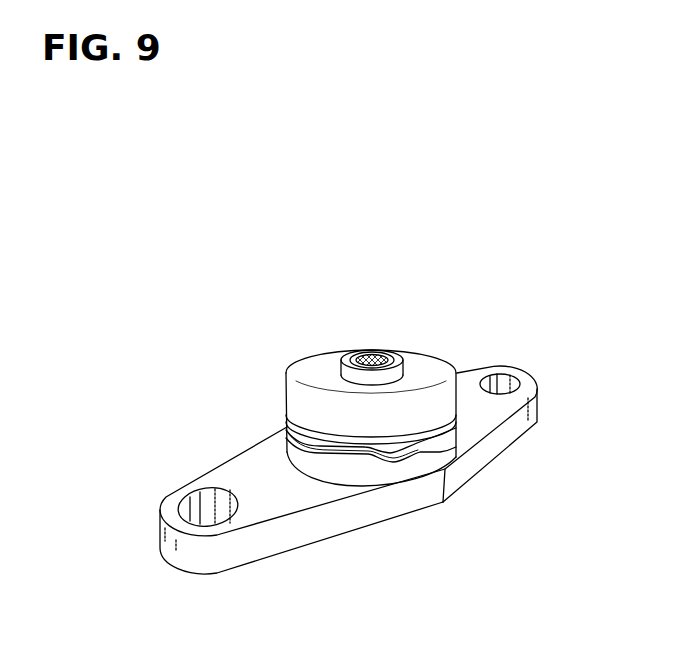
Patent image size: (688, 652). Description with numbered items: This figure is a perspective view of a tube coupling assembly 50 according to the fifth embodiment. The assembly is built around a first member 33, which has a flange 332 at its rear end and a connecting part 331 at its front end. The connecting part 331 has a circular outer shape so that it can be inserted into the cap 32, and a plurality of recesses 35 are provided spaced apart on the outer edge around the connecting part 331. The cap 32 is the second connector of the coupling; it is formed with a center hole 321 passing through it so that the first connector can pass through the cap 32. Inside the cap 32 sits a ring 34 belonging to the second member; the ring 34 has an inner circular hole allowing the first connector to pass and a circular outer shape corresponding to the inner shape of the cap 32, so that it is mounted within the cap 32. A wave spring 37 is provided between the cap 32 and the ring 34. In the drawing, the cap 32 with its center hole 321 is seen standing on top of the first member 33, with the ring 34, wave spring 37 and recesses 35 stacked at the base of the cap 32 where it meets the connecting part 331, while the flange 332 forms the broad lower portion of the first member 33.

The tube coupling assembly 50 is at (205, 283).
The cap 32 is at (314, 403).
The center hole 321 is at (352, 378).
The wave spring 37 is at (397, 366).
The first member 33 is at (247, 458).
The connecting part 331 is at (422, 451).
The flange 332 is at (267, 497).
The ring 34 is at (457, 423).
The recesses 35 is at (393, 462).